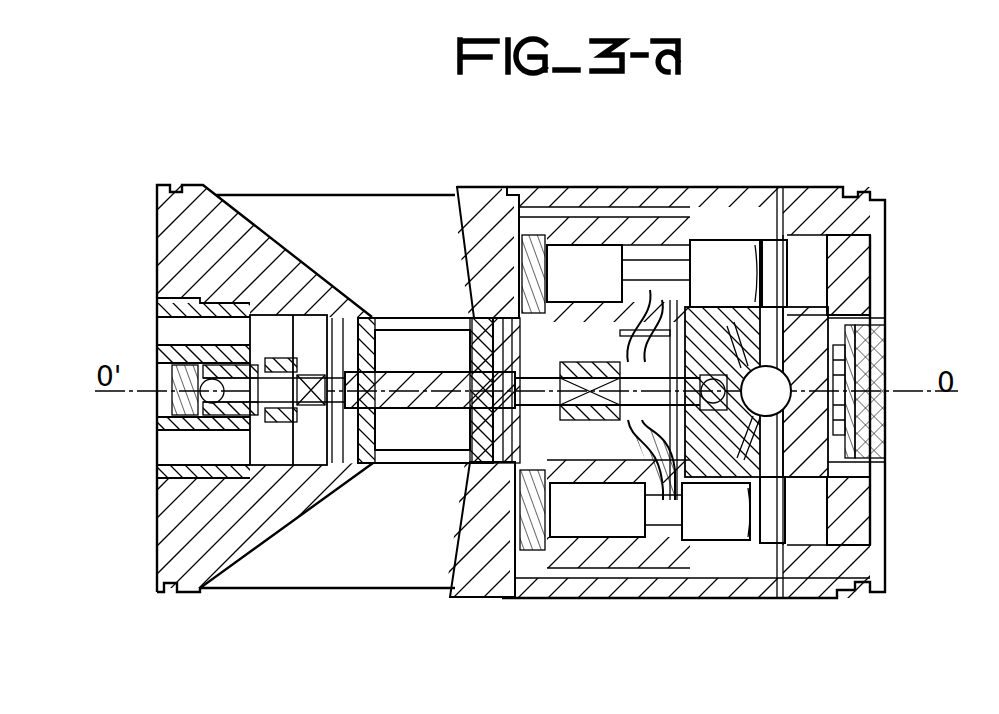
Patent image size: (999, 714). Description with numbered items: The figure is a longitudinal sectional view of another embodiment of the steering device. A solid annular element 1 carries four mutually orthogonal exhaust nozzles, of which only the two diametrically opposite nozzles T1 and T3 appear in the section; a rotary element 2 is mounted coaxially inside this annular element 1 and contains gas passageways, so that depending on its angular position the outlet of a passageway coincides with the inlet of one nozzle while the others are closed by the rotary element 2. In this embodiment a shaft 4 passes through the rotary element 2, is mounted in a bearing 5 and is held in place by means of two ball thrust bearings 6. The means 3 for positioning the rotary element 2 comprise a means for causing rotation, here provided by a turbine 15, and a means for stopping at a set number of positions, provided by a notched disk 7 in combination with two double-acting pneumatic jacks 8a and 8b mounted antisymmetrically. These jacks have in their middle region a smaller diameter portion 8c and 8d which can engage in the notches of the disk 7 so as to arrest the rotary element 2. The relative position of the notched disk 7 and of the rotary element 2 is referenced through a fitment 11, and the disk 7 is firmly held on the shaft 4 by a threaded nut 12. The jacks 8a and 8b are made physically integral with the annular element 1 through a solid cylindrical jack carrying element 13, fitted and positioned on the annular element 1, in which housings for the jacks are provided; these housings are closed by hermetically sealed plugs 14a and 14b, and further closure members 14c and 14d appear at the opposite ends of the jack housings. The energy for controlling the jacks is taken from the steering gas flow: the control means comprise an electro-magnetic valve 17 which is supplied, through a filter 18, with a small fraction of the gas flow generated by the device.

The annular element 1 is at (157, 210).
The rotary element 2 is at (397, 464).
The means for positioning the rotary element 3 is at (539, 390).
The shaft 4 is at (560, 413).
The bearing 5 is at (555, 362).
The ball thrust bearing 6 is at (172, 392).
The notched disk 7 is at (658, 332).
The pneumatic jack 8a is at (722, 252).
The pneumatic jack 8b is at (722, 545).
The smaller diameter portion 8c is at (632, 270).
The smaller diameter portion 8d is at (637, 502).
The fitment 11 is at (620, 420).
The threaded nut 12 is at (700, 332).
The cylindrical jack carrying element 13 is at (828, 172).
The hermetically sealed plug 14a is at (872, 260).
The hermetically sealed plug 14b is at (872, 492).
The bearing block 14c is at (512, 262).
The bearing block 14d is at (512, 530).
The turbine 15 is at (292, 432).
The electromagnetic valve 17 is at (812, 347).
The filter 18 is at (875, 378).
The exhaust nozzle T1 is at (290, 195).
The exhaust nozzle T3 is at (300, 588).